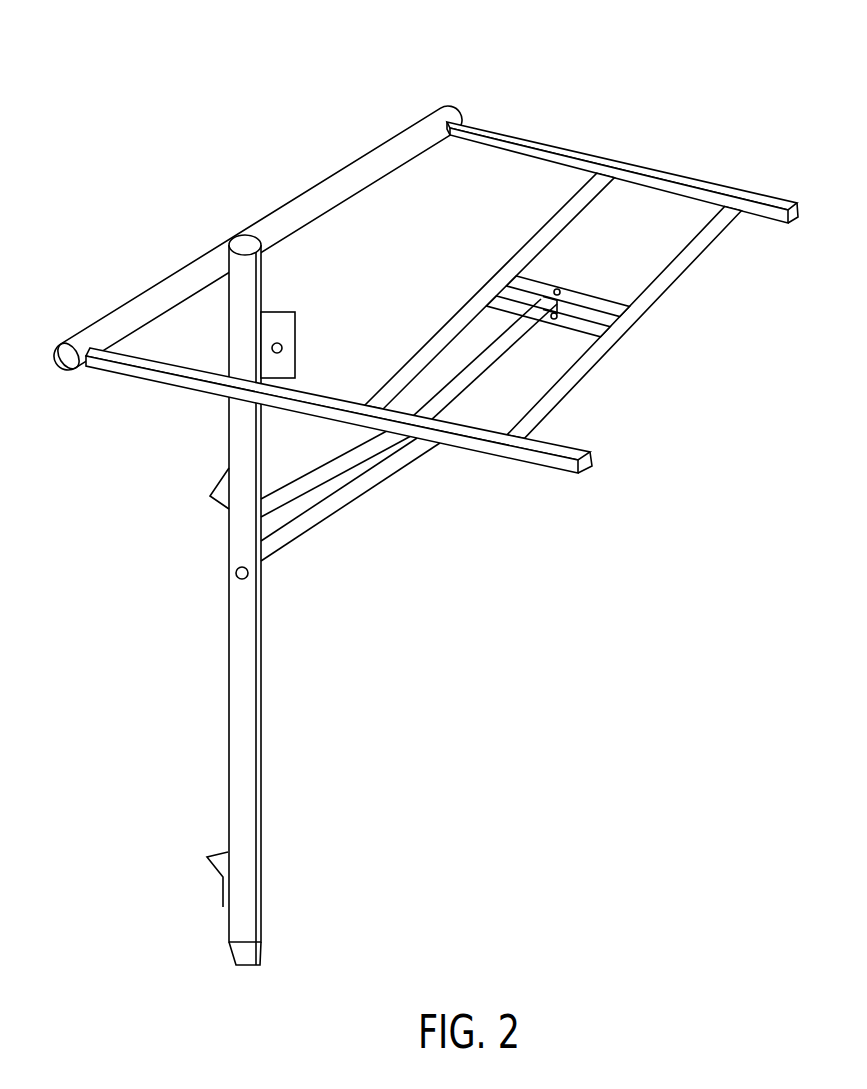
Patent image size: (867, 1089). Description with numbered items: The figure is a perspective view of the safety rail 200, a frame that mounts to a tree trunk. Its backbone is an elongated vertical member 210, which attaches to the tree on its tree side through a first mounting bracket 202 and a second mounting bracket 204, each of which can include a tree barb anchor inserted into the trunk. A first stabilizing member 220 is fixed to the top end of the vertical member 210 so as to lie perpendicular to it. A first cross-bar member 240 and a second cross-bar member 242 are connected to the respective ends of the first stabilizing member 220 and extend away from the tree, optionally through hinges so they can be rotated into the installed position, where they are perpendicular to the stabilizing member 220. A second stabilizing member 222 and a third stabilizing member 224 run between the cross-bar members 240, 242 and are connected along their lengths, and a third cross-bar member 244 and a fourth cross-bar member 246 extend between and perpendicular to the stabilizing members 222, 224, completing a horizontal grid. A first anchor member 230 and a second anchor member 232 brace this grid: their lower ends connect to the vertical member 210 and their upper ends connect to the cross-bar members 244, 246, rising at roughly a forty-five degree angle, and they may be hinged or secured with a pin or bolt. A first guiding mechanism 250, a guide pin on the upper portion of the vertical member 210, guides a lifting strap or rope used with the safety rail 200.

The safety rail 200 is at (683, 67).
The first mounting bracket 202 is at (210, 496).
The second mounting bracket 204 is at (208, 860).
The elongated vertical member 210 is at (228, 672).
The first stabilizing member 220 is at (327, 179).
The second stabilizing member 222 is at (547, 232).
The third stabilizing member 224 is at (704, 248).
The first anchor member 230 is at (295, 478).
The second anchor member 232 is at (353, 485).
The first cross-bar member 240 is at (463, 449).
The second cross-bar member 242 is at (512, 138).
The third cross-bar member 244 is at (573, 332).
The fourth cross-bar member 246 is at (552, 287).
The first guiding mechanism 250 is at (297, 330).